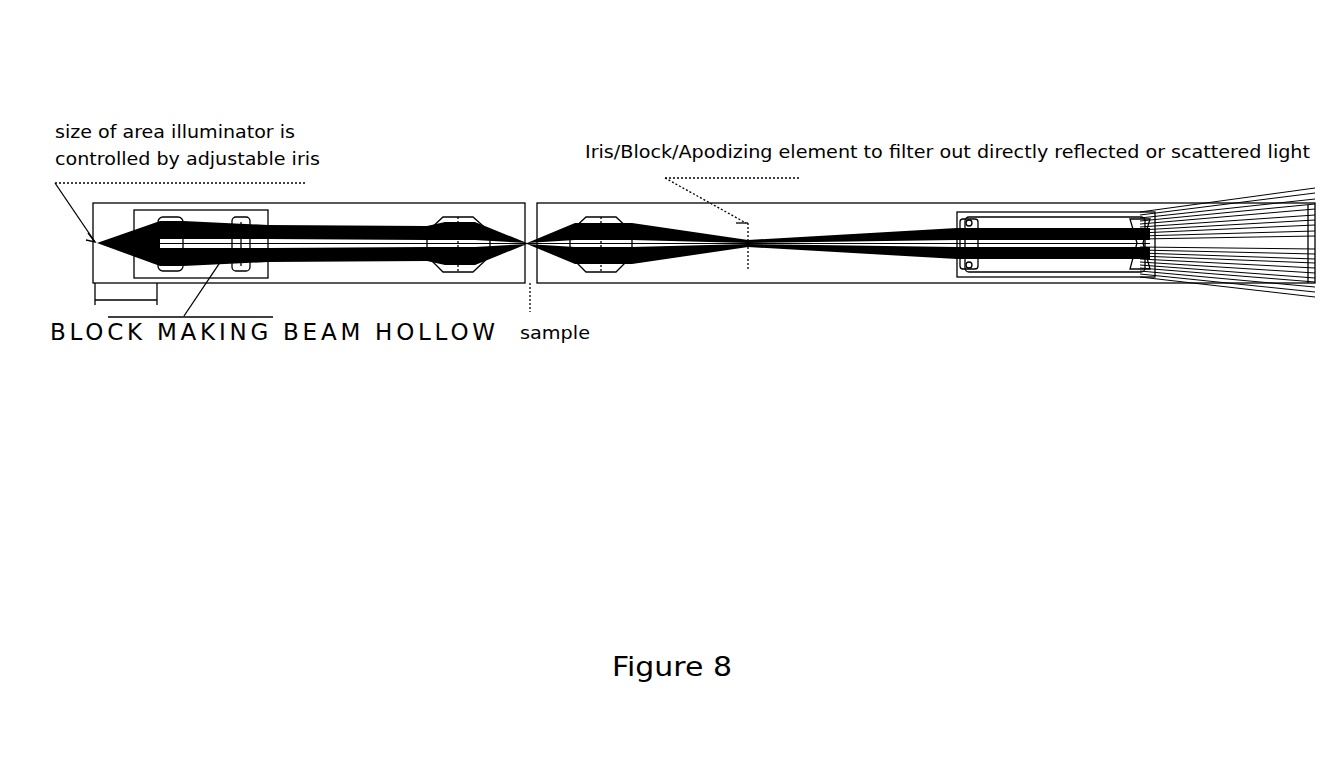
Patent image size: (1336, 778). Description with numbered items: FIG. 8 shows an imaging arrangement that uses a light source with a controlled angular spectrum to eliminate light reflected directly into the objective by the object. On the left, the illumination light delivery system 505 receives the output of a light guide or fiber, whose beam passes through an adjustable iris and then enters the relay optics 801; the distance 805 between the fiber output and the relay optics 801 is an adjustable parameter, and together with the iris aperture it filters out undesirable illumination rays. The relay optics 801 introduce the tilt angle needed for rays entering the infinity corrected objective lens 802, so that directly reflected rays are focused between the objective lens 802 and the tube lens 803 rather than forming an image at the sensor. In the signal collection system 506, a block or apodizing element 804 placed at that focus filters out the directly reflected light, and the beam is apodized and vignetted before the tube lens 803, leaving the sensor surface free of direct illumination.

The illumination light delivery system 505 is at (362, 203).
The signal collection system 506 is at (838, 203).
The relay optics 801 is at (268, 278).
The objective lens 802 is at (427, 222).
The tube lens 803 is at (992, 278).
The block or apodizing element 804 is at (1120, 343).
The distance between fiber output and relay optics 805 is at (135, 300).